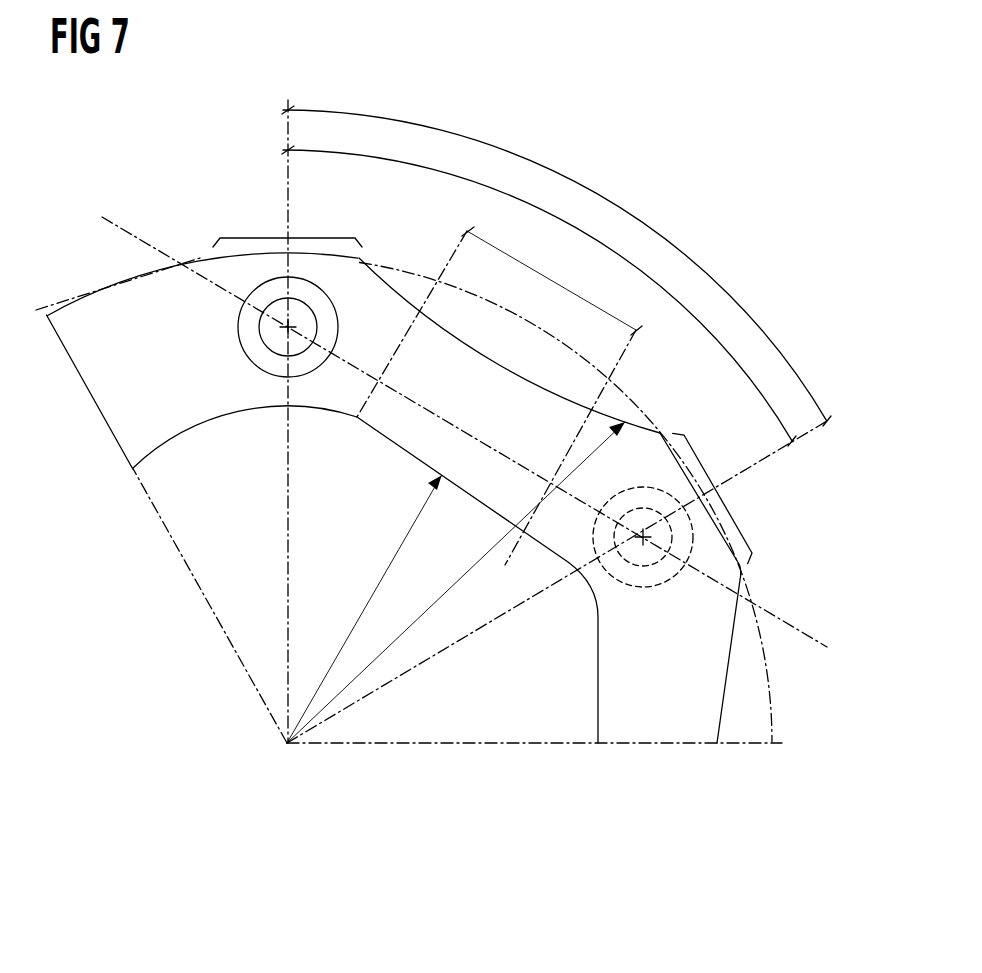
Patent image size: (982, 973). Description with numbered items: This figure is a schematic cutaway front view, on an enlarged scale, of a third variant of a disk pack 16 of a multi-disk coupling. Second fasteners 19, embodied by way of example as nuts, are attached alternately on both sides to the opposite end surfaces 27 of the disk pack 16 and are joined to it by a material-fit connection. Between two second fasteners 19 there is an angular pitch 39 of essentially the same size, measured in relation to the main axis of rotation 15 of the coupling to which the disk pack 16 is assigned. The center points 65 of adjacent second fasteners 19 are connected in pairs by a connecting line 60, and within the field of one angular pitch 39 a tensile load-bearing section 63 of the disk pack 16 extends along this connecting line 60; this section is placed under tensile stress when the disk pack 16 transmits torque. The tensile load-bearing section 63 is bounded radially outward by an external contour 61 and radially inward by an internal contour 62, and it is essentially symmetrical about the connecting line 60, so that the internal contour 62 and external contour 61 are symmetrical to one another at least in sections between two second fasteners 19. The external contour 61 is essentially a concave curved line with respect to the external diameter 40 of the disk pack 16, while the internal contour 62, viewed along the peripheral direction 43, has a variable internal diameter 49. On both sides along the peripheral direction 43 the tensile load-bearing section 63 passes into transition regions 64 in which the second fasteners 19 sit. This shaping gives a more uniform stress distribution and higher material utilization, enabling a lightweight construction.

The main axis of rotation 15 is at (283, 748).
The disk pack 16 is at (125, 427).
The second fasteners 19 is at (237, 340).
The end surfaces 27 is at (184, 440).
The angular pitch 39 is at (608, 238).
The external diameter 40 is at (480, 562).
The peripheral direction 43 is at (597, 190).
The internal diameter 49 is at (374, 590).
The connecting line 60 is at (790, 623).
The external contour 61 is at (408, 300).
The internal contour 62 is at (378, 438).
The tensile load-bearing section 63 is at (545, 279).
The transition regions 64 is at (727, 489).
The center points 65 is at (283, 327).